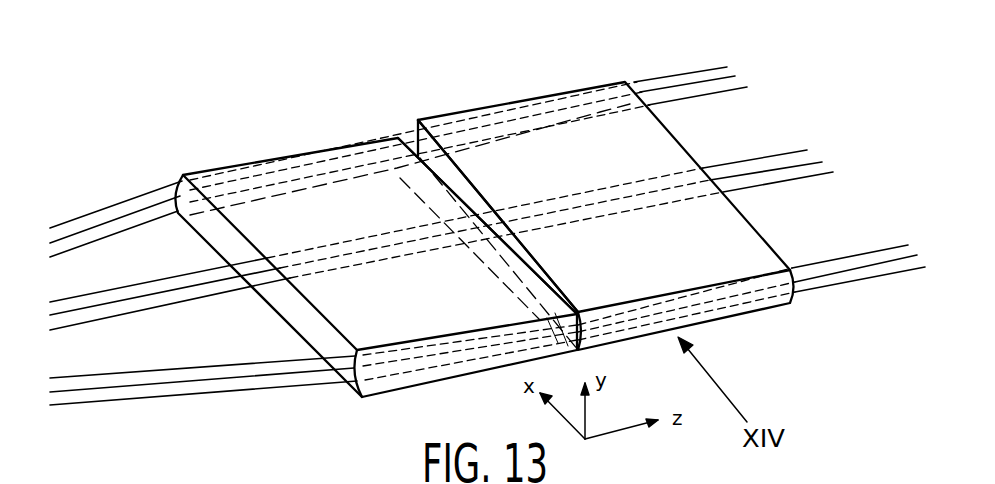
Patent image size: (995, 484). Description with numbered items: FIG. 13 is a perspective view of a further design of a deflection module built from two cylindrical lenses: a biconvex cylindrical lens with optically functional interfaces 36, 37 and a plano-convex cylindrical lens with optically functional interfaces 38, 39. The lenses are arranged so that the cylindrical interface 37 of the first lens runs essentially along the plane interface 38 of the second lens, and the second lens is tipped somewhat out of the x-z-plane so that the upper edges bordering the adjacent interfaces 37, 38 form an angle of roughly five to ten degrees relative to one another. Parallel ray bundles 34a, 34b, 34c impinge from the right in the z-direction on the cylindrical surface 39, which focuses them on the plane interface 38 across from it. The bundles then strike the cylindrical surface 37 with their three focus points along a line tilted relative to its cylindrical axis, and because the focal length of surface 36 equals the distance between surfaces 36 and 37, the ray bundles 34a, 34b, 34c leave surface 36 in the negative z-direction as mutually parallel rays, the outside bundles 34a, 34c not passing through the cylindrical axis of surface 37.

The ray bundle 34a is at (96, 230).
The ray bundle 34b is at (96, 312).
The ray bundle 34c is at (96, 400).
The optically functional interface 36 is at (207, 227).
The optically functional interface 37 is at (405, 142).
The plane optically functional interface 38 is at (406, 128).
The optically functional interface 39 is at (636, 82).